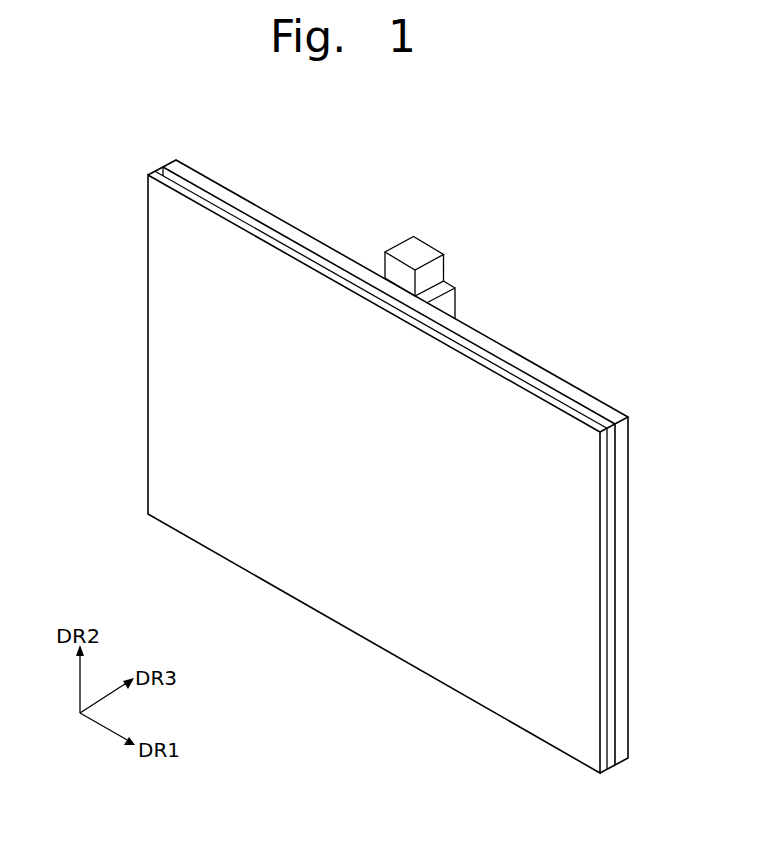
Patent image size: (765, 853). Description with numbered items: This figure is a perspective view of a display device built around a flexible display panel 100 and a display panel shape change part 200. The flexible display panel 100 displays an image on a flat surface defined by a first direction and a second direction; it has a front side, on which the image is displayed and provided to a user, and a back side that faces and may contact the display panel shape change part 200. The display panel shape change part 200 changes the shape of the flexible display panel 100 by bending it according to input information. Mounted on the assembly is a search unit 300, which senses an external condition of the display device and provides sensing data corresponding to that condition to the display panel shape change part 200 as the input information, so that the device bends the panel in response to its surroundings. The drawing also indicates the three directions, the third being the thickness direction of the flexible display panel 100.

The flexible display panel 100 is at (378, 625).
The display panel shape change part 200 is at (592, 393).
The search unit 300 is at (427, 243).